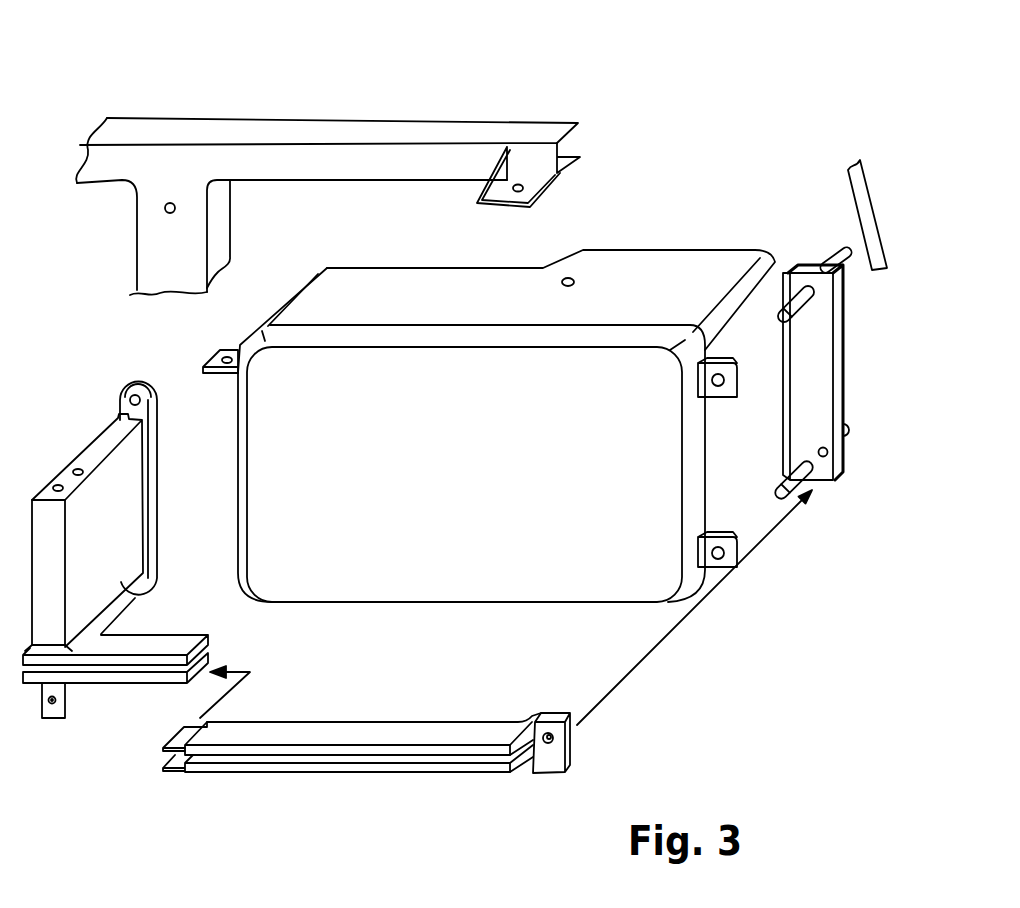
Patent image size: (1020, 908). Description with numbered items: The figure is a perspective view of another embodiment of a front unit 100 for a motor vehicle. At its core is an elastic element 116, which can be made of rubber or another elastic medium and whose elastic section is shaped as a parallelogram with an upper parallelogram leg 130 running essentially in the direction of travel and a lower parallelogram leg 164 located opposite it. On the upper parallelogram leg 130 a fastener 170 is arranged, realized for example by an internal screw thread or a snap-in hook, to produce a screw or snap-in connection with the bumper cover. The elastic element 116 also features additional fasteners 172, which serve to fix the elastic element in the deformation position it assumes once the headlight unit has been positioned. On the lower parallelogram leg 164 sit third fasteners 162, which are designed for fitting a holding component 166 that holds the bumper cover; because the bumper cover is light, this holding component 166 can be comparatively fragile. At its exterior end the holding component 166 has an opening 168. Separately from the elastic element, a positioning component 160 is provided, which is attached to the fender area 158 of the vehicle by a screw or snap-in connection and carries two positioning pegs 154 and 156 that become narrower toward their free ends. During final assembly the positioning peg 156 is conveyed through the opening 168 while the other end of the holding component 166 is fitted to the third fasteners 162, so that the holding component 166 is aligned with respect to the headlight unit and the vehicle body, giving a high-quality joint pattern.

The front unit 100 is at (452, 108).
The elastic element 116 is at (130, 507).
The upper parallelogram leg 130 is at (108, 440).
The positioning peg 154 is at (783, 295).
The positioning peg 156 is at (787, 468).
The fender area 158 is at (858, 160).
The positioning component 160 is at (817, 280).
The third fasteners 162 is at (37, 677).
The lower parallelogram leg 164 is at (148, 580).
The holding component 166 is at (390, 733).
The opening 168 is at (553, 737).
The fastener 170 is at (57, 485).
The additional fasteners 172 is at (56, 701).